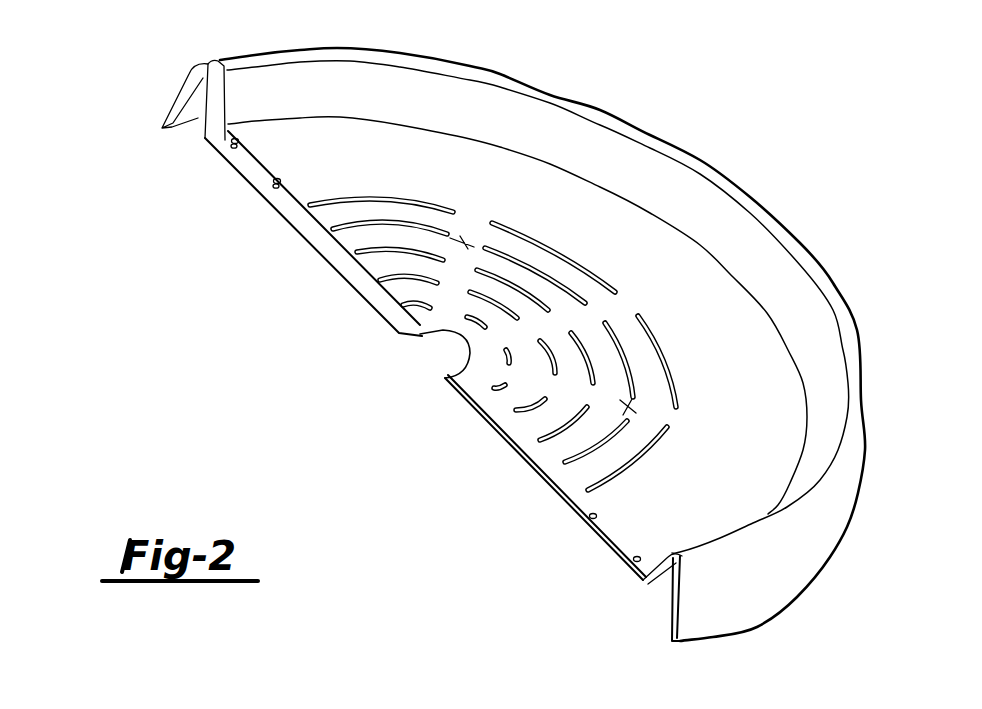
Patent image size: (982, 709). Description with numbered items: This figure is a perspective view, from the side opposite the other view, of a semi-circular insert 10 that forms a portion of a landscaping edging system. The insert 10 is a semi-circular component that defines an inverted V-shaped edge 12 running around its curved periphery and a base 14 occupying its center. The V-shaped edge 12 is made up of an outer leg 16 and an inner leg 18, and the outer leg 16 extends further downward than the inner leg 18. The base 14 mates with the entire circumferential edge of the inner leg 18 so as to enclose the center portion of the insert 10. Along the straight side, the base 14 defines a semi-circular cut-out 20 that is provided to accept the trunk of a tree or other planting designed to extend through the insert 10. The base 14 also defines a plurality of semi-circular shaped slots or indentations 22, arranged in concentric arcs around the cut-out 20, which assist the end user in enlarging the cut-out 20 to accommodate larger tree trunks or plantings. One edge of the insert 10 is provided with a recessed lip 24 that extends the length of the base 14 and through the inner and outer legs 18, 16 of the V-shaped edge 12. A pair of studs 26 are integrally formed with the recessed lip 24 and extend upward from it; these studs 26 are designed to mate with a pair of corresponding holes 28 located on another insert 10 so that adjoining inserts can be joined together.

The semi-circular insert 10 is at (722, 92).
The inverted V-shaped edge 12 is at (786, 570).
The base 14 is at (720, 457).
The outer leg 16 is at (680, 603).
The inner leg 18 is at (667, 580).
The semi-circular cut-out 20 is at (457, 352).
The semi-circular shaped slots or indentations 22 is at (645, 320).
The recessed lip 24 is at (313, 232).
The studs 26 is at (270, 183).
The holes 28 is at (587, 518).